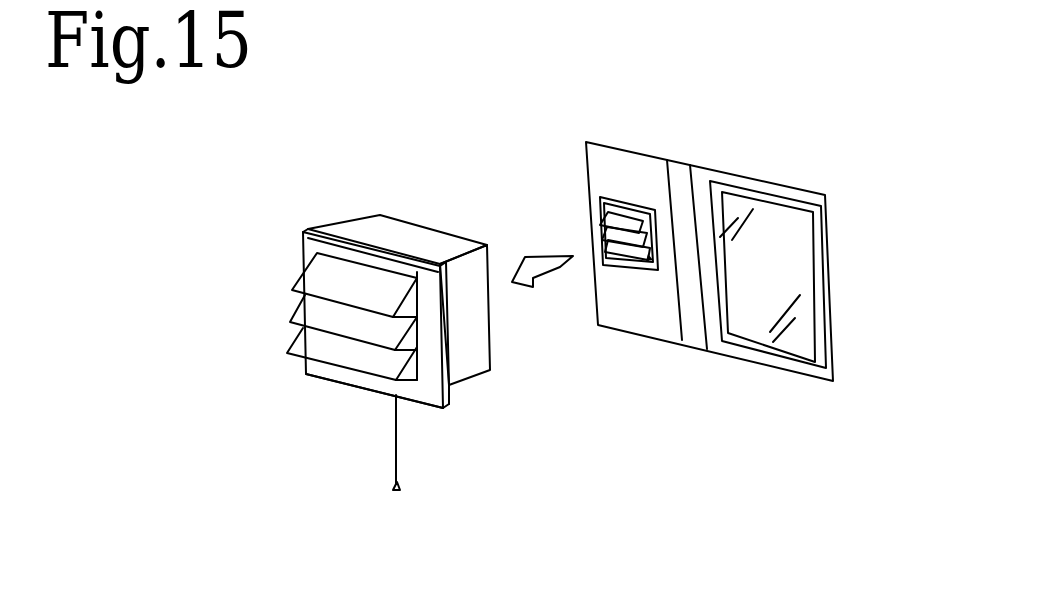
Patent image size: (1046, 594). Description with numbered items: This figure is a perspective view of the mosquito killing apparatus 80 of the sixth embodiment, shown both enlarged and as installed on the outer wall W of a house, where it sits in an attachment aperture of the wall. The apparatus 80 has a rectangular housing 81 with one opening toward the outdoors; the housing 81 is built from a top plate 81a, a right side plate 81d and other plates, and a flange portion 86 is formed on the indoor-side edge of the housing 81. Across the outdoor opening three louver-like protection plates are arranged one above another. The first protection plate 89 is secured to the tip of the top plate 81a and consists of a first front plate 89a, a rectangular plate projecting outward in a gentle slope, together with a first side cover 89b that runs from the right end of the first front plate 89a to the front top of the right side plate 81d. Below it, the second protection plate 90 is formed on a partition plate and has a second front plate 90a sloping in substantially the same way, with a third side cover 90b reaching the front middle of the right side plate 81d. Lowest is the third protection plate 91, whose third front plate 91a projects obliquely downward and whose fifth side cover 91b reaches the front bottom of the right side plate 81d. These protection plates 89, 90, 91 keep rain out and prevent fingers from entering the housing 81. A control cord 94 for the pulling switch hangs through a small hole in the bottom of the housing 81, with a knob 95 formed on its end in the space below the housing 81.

The wall W is at (596, 178).
The mosquito killing apparatus 80 is at (270, 300).
The housing 81 is at (453, 307).
The top plate 81a is at (410, 235).
The right side plate 81d is at (478, 323).
The flange portion 86 is at (419, 398).
The first protection plate 89 is at (429, 301).
The first front plate 89a is at (332, 277).
The first side cover 89b is at (410, 306).
The second protection plate 90 is at (406, 391).
The second front plate 90a is at (340, 343).
The third side cover 90b is at (410, 343).
The third protection plate 91 is at (364, 444).
The third front plate 91a is at (337, 368).
The fifth side cover 91b is at (411, 395).
The cord 94 is at (395, 437).
The knob 95 is at (396, 490).